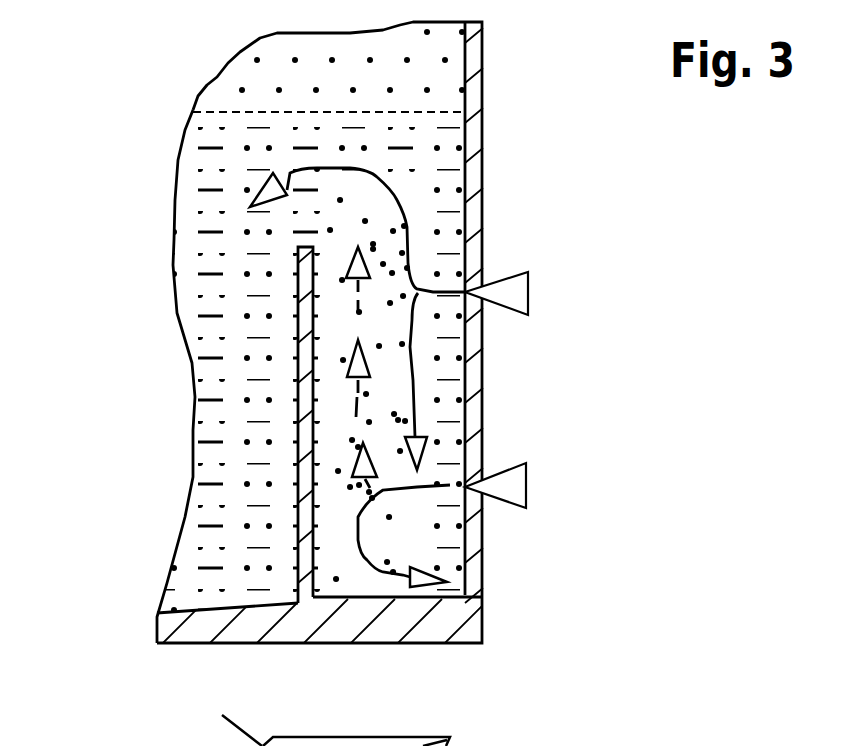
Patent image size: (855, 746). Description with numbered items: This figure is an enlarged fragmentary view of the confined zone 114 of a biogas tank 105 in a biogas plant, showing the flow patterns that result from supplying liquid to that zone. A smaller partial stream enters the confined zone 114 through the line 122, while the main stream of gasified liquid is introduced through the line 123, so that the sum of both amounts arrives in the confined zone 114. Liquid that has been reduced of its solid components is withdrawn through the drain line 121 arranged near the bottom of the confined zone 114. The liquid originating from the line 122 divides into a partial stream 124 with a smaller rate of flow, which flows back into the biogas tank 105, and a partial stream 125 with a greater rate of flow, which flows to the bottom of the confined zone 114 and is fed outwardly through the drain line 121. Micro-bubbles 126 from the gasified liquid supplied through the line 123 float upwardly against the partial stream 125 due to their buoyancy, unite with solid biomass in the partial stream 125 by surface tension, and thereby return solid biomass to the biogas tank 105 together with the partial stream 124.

The biogas tank 105 is at (240, 543).
The confined zone 114 is at (332, 580).
The drain line 121 is at (465, 583).
The line 122 is at (528, 292).
The line 123 is at (526, 487).
The partial stream 124 is at (405, 220).
The partial stream 125 is at (413, 400).
The micro-bubbles 126 is at (357, 463).